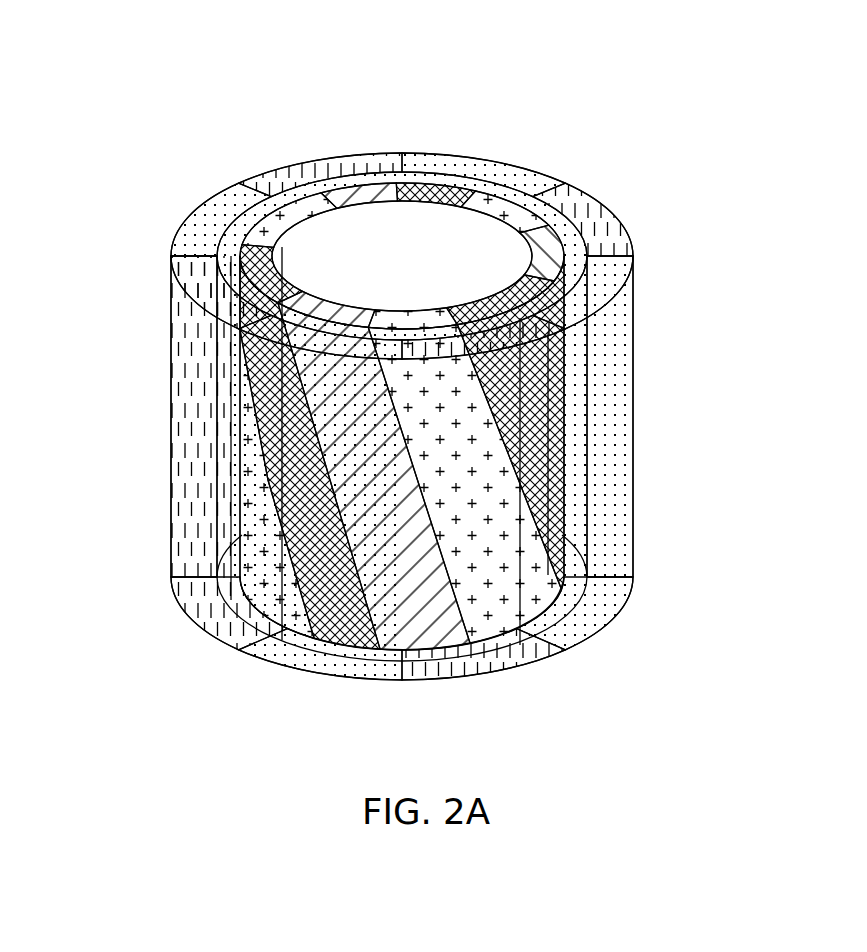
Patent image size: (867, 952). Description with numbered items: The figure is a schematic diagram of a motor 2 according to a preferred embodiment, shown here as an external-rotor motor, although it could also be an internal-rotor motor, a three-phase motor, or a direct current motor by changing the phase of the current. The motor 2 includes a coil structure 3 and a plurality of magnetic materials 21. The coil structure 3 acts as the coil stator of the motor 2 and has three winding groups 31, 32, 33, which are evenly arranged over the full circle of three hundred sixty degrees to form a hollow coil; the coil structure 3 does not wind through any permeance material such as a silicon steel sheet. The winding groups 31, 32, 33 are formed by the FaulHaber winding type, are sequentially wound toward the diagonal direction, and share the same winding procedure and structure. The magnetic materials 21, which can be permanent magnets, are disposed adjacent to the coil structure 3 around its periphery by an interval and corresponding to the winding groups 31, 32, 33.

The motor 2 is at (114, 76).
The coil structure 3 is at (470, 113).
The magnetic materials 21 is at (204, 233).
The winding group 31 is at (375, 196).
The winding group 32 is at (490, 204).
The winding group 33 is at (422, 192).